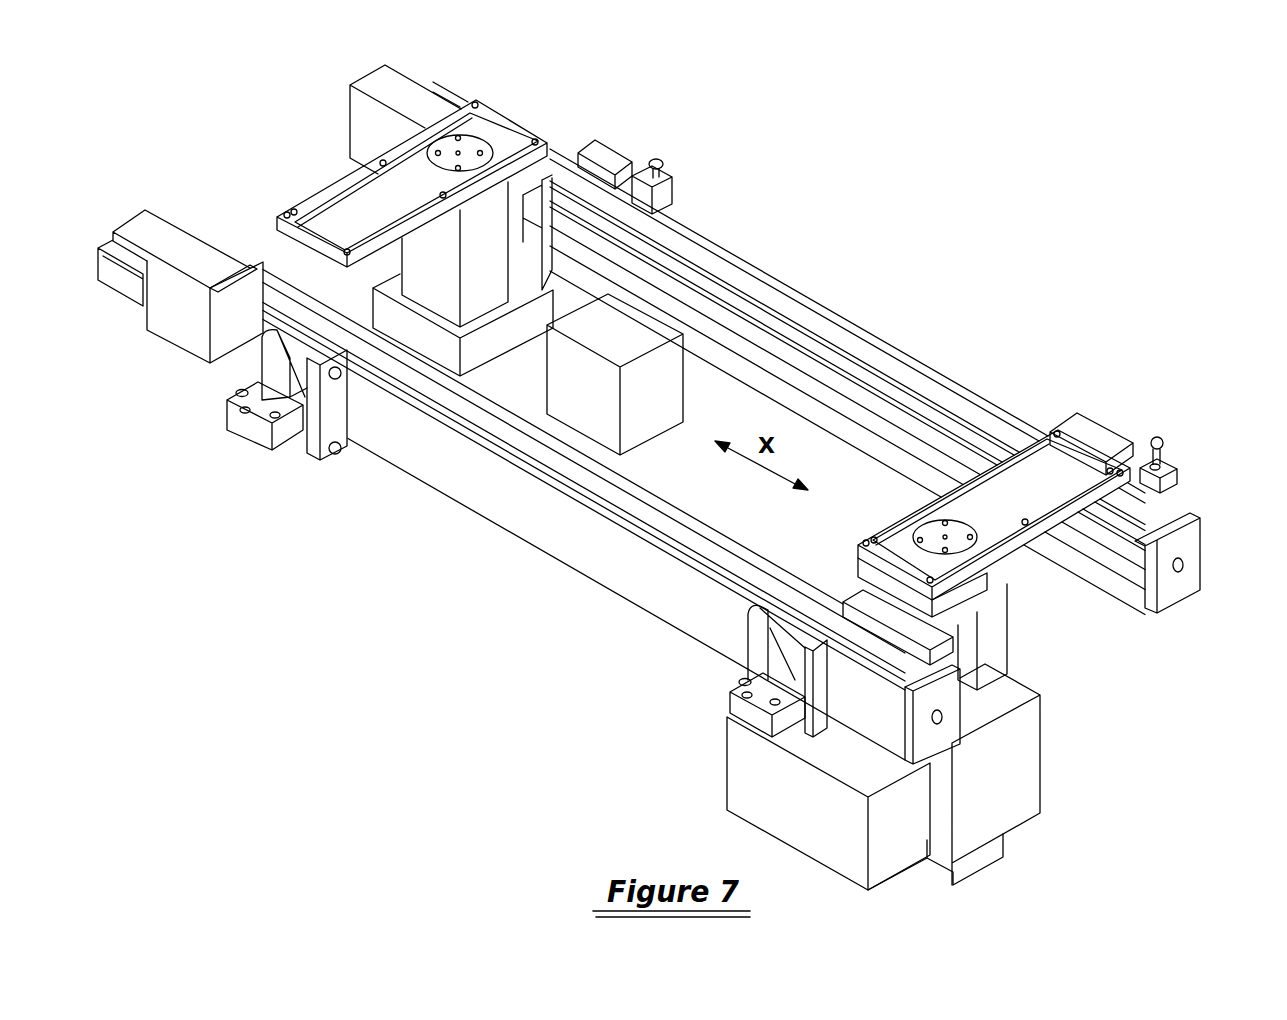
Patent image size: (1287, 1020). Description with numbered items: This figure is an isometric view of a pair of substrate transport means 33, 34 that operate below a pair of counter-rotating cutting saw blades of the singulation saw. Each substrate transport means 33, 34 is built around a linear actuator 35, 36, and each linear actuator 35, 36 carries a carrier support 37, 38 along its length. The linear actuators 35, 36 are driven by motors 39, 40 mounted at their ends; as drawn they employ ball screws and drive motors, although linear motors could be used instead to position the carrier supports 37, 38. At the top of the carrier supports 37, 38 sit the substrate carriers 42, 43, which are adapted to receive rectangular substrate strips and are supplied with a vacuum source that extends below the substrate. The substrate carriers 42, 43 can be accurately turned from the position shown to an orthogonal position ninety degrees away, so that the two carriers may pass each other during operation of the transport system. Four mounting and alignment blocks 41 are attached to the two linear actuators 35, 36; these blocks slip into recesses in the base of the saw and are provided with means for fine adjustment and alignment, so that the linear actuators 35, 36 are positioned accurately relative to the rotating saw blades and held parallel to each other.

The substrate transport means 33 is at (785, 255).
The substrate transport means 34 is at (643, 632).
The linear actuator 35 is at (885, 392).
The linear actuator 36 is at (698, 523).
The carrier support 37 is at (365, 301).
The carrier support 38 is at (1053, 723).
The motor 39 is at (385, 85).
The motor 40 is at (166, 236).
The mounting and alignment block 41 is at (250, 442).
The substrate carrier 42 is at (347, 207).
The substrate carrier 43 is at (1023, 477).